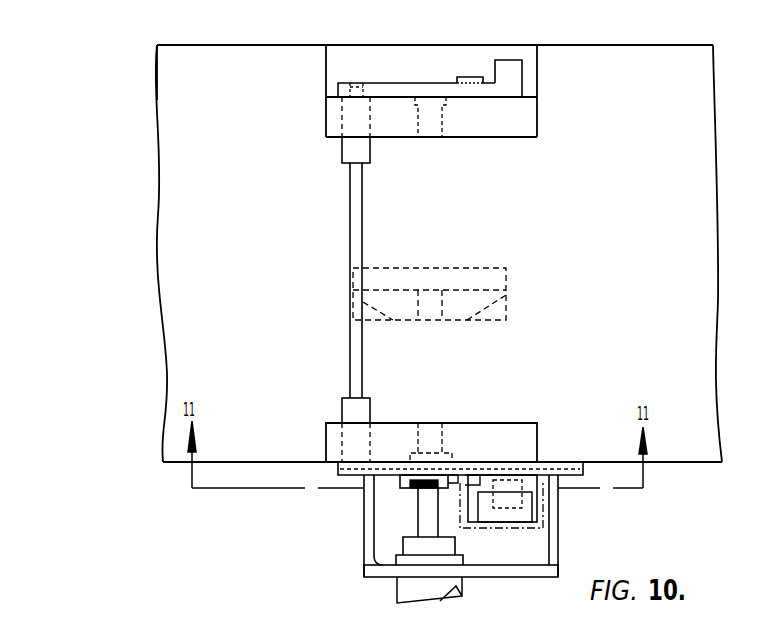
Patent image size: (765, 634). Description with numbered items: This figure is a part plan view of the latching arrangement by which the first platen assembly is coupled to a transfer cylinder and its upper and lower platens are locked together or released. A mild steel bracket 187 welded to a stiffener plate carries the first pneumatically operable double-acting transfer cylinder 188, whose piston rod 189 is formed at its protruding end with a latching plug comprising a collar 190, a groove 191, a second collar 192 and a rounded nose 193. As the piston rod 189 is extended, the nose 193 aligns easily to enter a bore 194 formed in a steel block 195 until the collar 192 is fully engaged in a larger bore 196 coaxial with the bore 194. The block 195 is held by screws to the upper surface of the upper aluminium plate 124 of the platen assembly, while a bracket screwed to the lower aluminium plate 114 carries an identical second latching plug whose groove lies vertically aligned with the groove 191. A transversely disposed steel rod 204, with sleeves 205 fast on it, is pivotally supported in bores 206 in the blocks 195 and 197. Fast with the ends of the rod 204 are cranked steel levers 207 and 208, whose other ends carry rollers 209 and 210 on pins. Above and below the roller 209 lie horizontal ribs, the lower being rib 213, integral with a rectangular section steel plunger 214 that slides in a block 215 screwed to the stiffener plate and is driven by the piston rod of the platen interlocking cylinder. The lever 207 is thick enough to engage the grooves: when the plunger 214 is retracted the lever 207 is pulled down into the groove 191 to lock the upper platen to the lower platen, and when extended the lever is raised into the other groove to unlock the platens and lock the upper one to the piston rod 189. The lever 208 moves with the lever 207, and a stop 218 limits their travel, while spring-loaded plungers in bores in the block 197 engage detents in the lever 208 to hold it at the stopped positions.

The upper aluminium plate 124 is at (274, 61).
The lower aluminium plate 114 is at (362, 57).
The block 197 is at (523, 110).
The cranked steel lever 208 is at (419, 88).
The stop 218 is at (472, 77).
The roller 210 is at (513, 67).
The bore 206 is at (342, 113).
The sleeve 205 is at (356, 150).
The steel rod 204 is at (355, 213).
The steel block 195 is at (332, 450).
The rounded nose 193 is at (432, 433).
The bore 194 is at (418, 432).
The cranked steel lever 207 is at (488, 468).
The larger bore 196 is at (368, 476).
The roller 209 is at (508, 485).
The plunger 214 is at (508, 518).
The block 215 is at (530, 503).
The horizontal rib 213 is at (540, 507).
The collar 190 is at (442, 482).
The second collar 192 is at (392, 487).
The groove 191 is at (427, 470).
The piston rod 189 is at (425, 518).
The transfer cylinder 188 is at (458, 585).
The bracket 187 is at (382, 572).